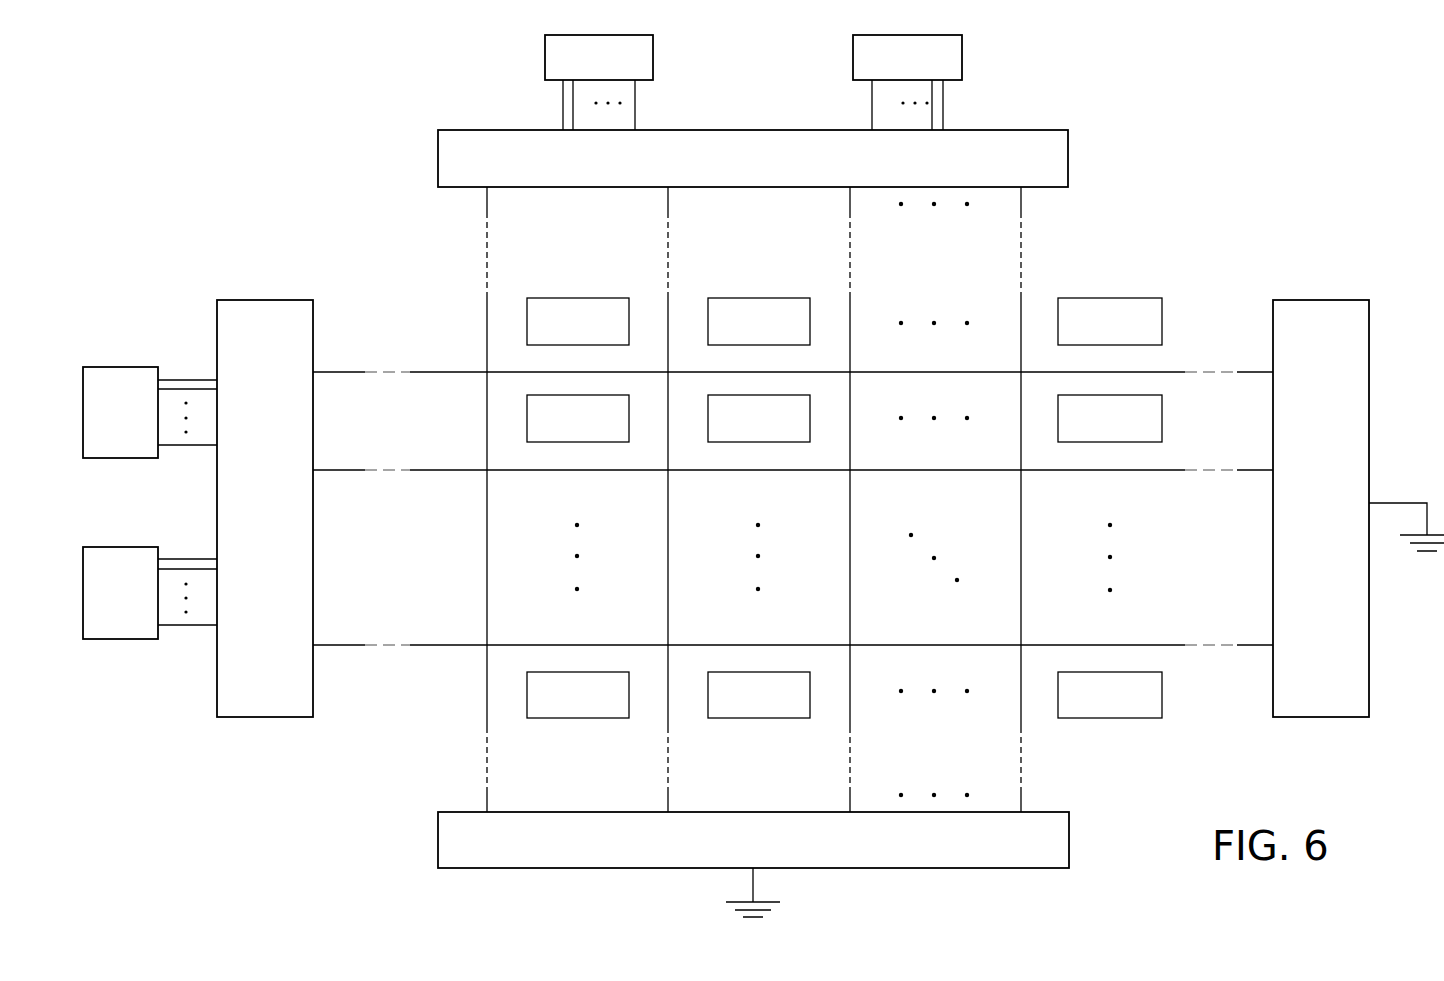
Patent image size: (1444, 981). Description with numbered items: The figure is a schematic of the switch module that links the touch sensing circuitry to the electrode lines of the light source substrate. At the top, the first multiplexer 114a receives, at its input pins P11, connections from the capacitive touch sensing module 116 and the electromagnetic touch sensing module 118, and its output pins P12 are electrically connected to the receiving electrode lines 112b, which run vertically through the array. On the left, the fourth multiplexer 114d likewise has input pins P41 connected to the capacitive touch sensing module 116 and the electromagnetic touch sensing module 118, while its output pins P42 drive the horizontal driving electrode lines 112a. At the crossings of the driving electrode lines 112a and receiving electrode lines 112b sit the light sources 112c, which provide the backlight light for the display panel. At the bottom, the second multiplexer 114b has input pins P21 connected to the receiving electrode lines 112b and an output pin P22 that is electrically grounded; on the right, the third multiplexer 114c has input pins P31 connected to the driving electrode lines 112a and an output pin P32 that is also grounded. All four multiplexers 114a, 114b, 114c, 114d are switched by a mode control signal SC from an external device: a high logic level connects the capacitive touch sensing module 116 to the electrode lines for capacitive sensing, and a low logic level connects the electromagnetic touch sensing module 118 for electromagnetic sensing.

The capacitive touch sensing module 116 is at (139, 426).
The electromagnetic touch sensing module 118 is at (139, 606).
The first multiplexer 114a is at (727, 172).
The second multiplexer 114b is at (727, 854).
The third multiplexer 114c is at (1296, 516).
The fourth multiplexer 114d is at (239, 516).
The driving electrode lines 112a is at (440, 643).
The receiving electrode lines 112b is at (1068, 273).
The light sources 112c is at (1136, 709).
The input pins P11 is at (991, 104).
The output pins P12 is at (1070, 234).
The input pins P21 is at (1070, 765).
The output pin P22 is at (756, 882).
The input pins P31 is at (1258, 644).
The output pin P32 is at (1400, 503).
The input pins P41 is at (186, 680).
The output pins P42 is at (330, 644).
The mode control signal SC is at (1322, 298).